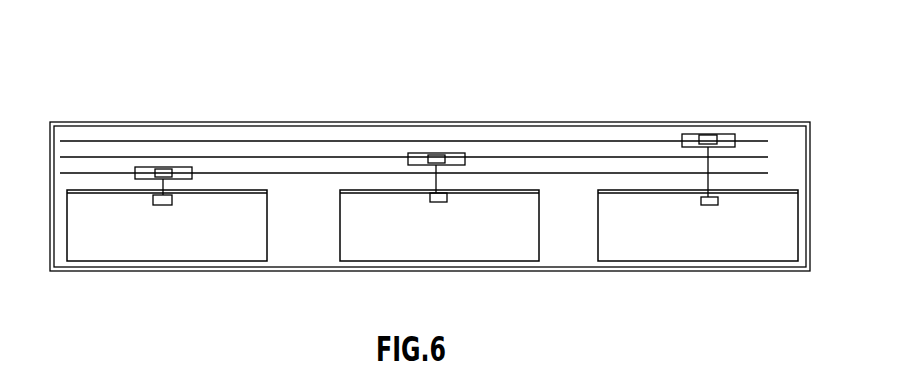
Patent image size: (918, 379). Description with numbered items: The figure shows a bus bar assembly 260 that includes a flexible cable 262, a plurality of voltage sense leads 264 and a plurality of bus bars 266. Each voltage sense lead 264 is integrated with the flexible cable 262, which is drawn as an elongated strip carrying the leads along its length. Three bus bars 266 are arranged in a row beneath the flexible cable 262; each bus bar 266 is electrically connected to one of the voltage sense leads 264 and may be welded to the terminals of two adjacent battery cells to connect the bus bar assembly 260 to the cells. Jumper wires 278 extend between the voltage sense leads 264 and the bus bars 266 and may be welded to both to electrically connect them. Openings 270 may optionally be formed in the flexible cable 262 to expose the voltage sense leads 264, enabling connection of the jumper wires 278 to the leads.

The bus bar assembly 260 is at (449, 74).
The flexible cable 262 is at (557, 133).
The voltage sense leads 264 is at (650, 173).
The bus bars 266 is at (162, 244).
The openings 270 is at (181, 167).
The jumper wires 278 is at (168, 185).